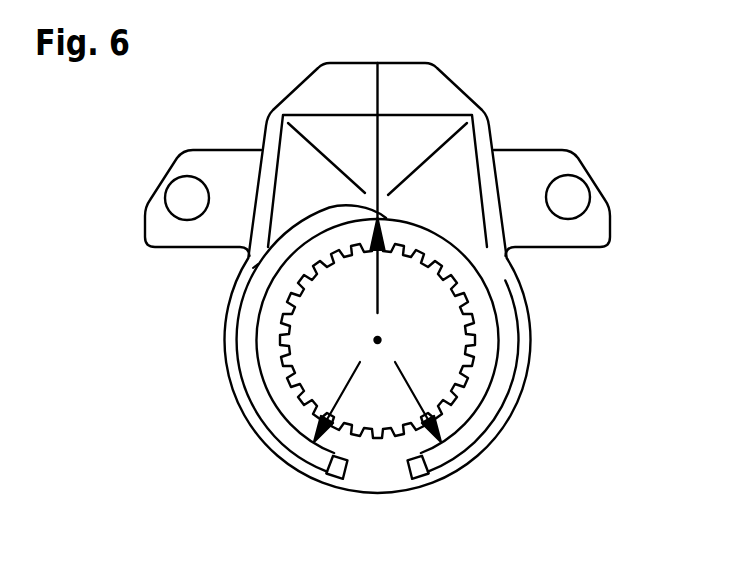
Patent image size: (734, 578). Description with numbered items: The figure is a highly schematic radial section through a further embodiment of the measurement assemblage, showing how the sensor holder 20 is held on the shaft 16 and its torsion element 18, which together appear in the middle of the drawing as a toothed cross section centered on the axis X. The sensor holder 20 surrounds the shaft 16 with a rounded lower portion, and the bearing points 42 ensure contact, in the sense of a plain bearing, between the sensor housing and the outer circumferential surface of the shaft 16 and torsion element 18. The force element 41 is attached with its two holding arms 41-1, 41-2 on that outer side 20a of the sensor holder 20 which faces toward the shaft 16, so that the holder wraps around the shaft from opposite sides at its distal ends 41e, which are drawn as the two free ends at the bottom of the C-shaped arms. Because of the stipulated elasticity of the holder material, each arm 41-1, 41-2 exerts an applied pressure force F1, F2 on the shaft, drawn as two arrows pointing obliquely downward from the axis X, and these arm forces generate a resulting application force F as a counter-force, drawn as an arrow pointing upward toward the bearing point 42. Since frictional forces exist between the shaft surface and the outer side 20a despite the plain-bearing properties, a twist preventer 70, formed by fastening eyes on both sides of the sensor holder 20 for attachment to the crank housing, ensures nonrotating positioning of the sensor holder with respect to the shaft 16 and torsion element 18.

The sensor holder 20 is at (447, 100).
The outer side of sensor holder 20a is at (414, 56).
The twist preventer 70 is at (183, 195).
The force element 41 is at (380, 379).
The holding arm 41-1 is at (490, 402).
The holding arm 41-2 is at (267, 417).
The distal end 41e is at (335, 480).
The bearing point 42 is at (253, 268).
The shaft 16 is at (458, 340).
The torsion element 18 is at (475, 382).
The axis X is at (374, 341).
The resulting application force F is at (380, 290).
The applied pressure force F1 is at (352, 383).
The applied pressure force F2 is at (405, 394).